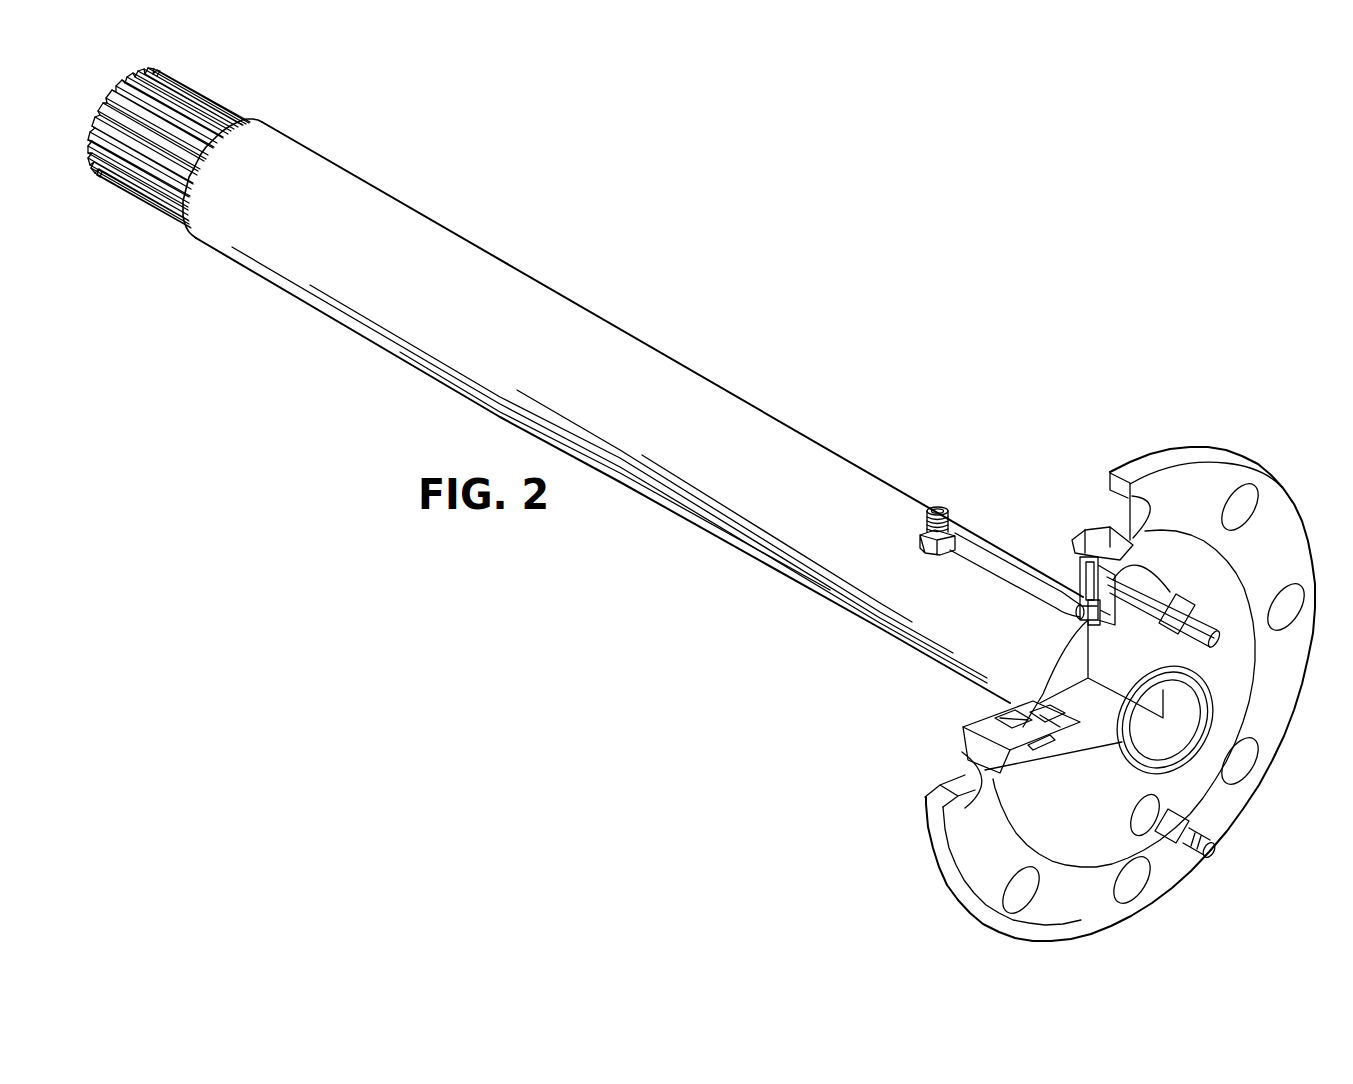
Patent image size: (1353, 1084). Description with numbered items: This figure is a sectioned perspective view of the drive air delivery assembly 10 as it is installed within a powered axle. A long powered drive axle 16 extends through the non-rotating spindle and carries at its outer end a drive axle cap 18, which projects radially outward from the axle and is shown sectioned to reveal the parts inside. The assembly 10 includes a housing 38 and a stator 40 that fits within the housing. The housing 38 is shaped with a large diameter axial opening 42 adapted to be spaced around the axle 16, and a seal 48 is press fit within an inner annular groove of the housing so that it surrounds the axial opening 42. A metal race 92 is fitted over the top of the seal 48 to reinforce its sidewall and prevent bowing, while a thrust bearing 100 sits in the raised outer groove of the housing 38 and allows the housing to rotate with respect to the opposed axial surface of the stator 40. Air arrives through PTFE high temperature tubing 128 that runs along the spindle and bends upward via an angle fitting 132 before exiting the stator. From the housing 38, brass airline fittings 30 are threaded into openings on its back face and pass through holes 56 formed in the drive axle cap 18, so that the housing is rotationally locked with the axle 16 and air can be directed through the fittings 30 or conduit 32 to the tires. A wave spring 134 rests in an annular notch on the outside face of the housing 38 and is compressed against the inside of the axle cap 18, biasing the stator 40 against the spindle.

The drive air delivery assembly 10 is at (1045, 488).
The powered drive axle 16 is at (598, 314).
The drive axle cap 18 is at (940, 882).
The air outlet tube 30 is at (1213, 624).
The air outlet conduit 32 is at (1216, 853).
The housing 38 is at (1088, 528).
The stator 40 is at (1078, 560).
The axial opening 42 is at (1032, 752).
The seal 48 is at (1048, 718).
The holes 56 is at (1150, 572).
The metal race 92 is at (1018, 706).
The thrust bearing 100 is at (985, 722).
The PTFE high temperature tubing 128 is at (985, 574).
The angle fitting 132 is at (936, 506).
The wave spring 134 is at (1136, 626).